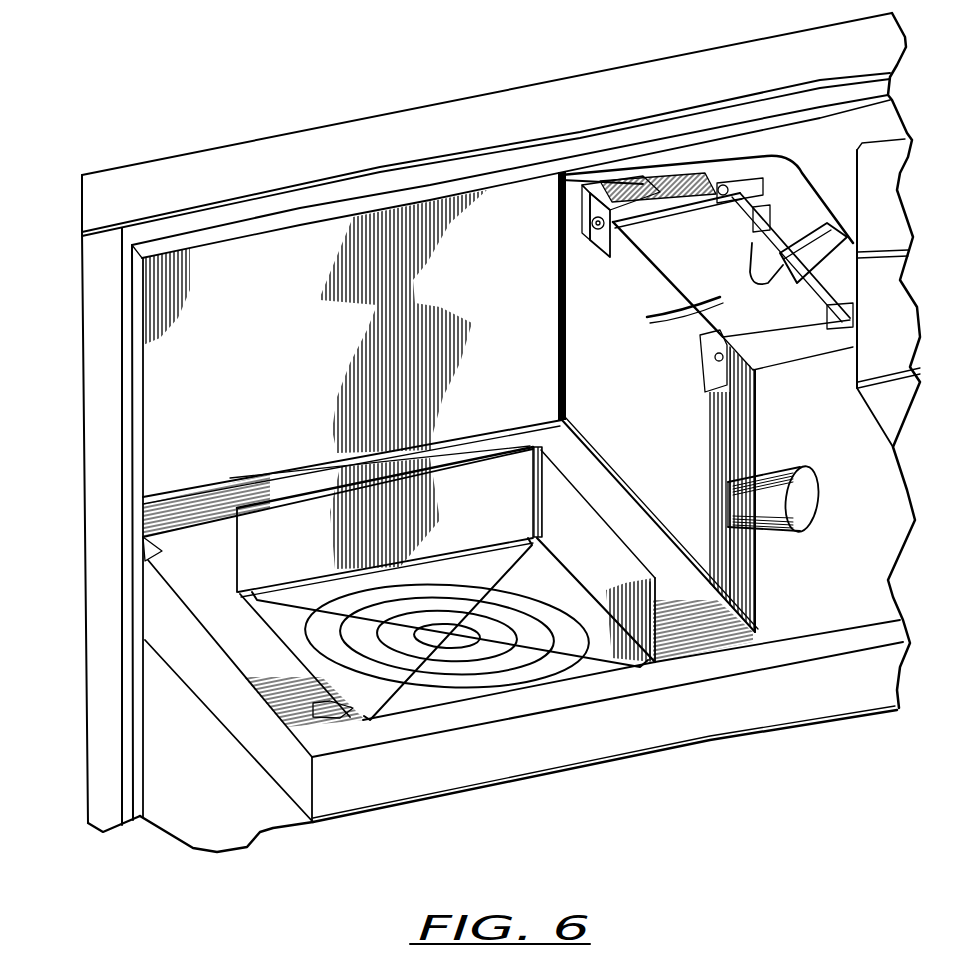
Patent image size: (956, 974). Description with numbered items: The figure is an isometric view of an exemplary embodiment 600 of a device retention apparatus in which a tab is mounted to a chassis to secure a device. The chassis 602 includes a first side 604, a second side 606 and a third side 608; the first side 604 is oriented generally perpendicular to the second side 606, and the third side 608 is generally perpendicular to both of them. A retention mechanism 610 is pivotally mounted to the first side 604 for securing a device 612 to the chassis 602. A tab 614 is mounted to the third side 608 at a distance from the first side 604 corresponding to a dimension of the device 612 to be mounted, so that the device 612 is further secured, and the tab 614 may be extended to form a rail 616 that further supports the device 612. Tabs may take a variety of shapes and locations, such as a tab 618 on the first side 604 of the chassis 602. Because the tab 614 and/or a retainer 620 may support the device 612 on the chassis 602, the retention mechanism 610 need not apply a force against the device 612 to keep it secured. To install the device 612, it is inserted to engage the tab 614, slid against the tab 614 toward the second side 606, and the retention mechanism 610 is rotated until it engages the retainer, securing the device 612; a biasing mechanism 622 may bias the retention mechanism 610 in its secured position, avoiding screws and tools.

The exemplary embodiment 600 is at (716, 768).
The chassis 602 is at (262, 121).
The first side 604 is at (524, 100).
The second side 606 is at (110, 337).
The third side 608 is at (786, 595).
The retention mechanism 610 is at (660, 232).
The device 612 is at (200, 399).
The tab 614 is at (335, 707).
The rail 616 is at (543, 703).
The tab 618 is at (148, 546).
The retainer 620 is at (586, 212).
The biasing mechanism 622 is at (800, 268).